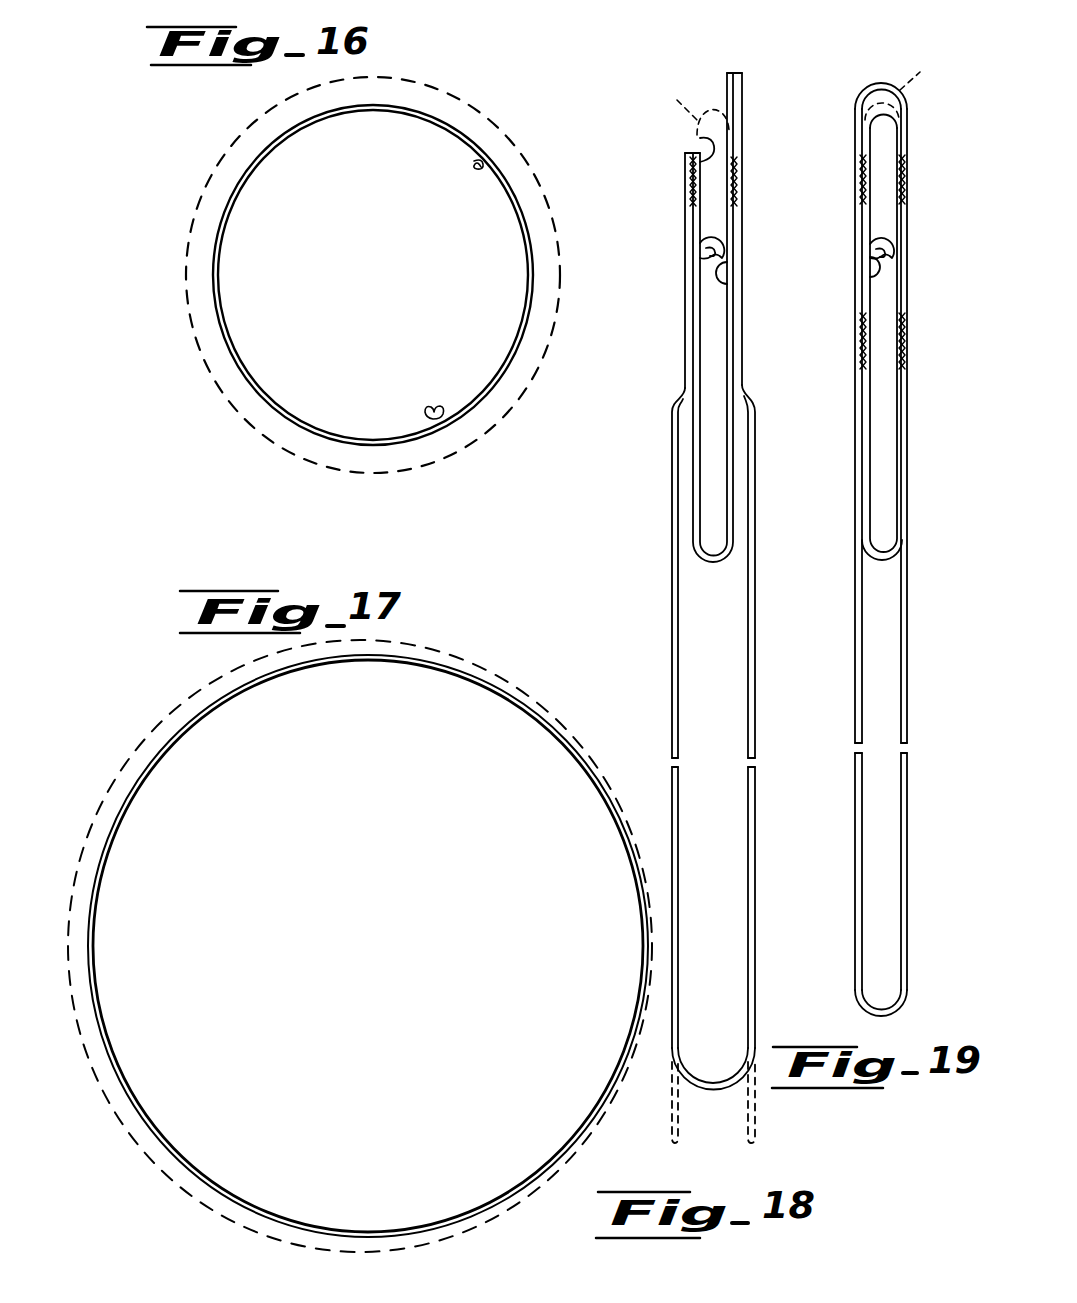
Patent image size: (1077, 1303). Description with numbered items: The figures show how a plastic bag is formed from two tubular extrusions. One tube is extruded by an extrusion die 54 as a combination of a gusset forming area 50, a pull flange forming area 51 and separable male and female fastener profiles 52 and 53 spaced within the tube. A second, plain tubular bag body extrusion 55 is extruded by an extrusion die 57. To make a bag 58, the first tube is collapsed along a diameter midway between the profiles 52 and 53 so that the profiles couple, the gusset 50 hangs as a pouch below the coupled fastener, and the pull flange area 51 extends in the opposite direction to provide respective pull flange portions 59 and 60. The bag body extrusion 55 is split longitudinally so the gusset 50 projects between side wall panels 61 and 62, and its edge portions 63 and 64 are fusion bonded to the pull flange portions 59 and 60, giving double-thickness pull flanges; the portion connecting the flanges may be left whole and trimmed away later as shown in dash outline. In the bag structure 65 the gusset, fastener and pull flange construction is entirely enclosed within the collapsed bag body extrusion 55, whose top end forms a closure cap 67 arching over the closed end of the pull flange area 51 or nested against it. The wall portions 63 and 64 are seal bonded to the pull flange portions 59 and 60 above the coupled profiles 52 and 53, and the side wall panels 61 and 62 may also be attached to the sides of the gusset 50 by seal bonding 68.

In FIG. 16, the gusset forming area 50 is at (214, 257).
In FIG. 18, the gusset forming area 50 is at (735, 452).
In FIG. 19, the gusset forming area 50 is at (900, 453).
In FIG. 16, the pull flange forming area 51 is at (528, 226).
In FIG. 18, the pull flange forming area 51 is at (689, 109).
In FIG. 19, the pull flange forming area 51 is at (887, 110).
In FIG. 16, the male profile 52 is at (436, 409).
In FIG. 18, the male profile 52 is at (725, 284).
In FIG. 19, the male profile 52 is at (892, 270).
In FIG. 16, the female profile 53 is at (473, 165).
In FIG. 18, the female profile 53 is at (722, 253).
In FIG. 19, the female profile 53 is at (892, 255).
In FIG. 16, the extrusion die 54 is at (512, 146).
In FIG. 17, the tubular bag body extrusion 55 is at (529, 710).
In FIG. 18, the tubular bag body extrusion 55 is at (717, 764).
In FIG. 19, the tubular bag body extrusion 55 is at (895, 533).
In FIG. 17, the extrusion die 57 is at (495, 671).
In FIG. 18, the bag 58 is at (711, 315).
In FIG. 19, the bag 58 is at (894, 338).
In FIG. 18, the pull flange portion 59 is at (731, 97).
In FIG. 19, the pull flange portion 59 is at (900, 147).
In FIG. 18, the pull flange portion 60 is at (703, 140).
In FIG. 19, the pull flange portion 60 is at (870, 225).
In FIG. 18, the side wall panel 61 is at (752, 752).
In FIG. 19, the side wall panel 61 is at (904, 763).
In FIG. 18, the side wall panel 62 is at (672, 562).
In FIG. 19, the side wall panel 62 is at (854, 752).
In FIG. 18, the edge portion 63 is at (738, 115).
In FIG. 19, the edge portion 63 is at (910, 168).
In FIG. 18, the edge portion 64 is at (690, 184).
In FIG. 19, the edge portion 64 is at (858, 145).
In FIG. 19, the bag structure 65 is at (895, 533).
In FIG. 19, the closure cap 67 is at (882, 84).
In FIG. 19, the seal bonding 68 is at (862, 340).